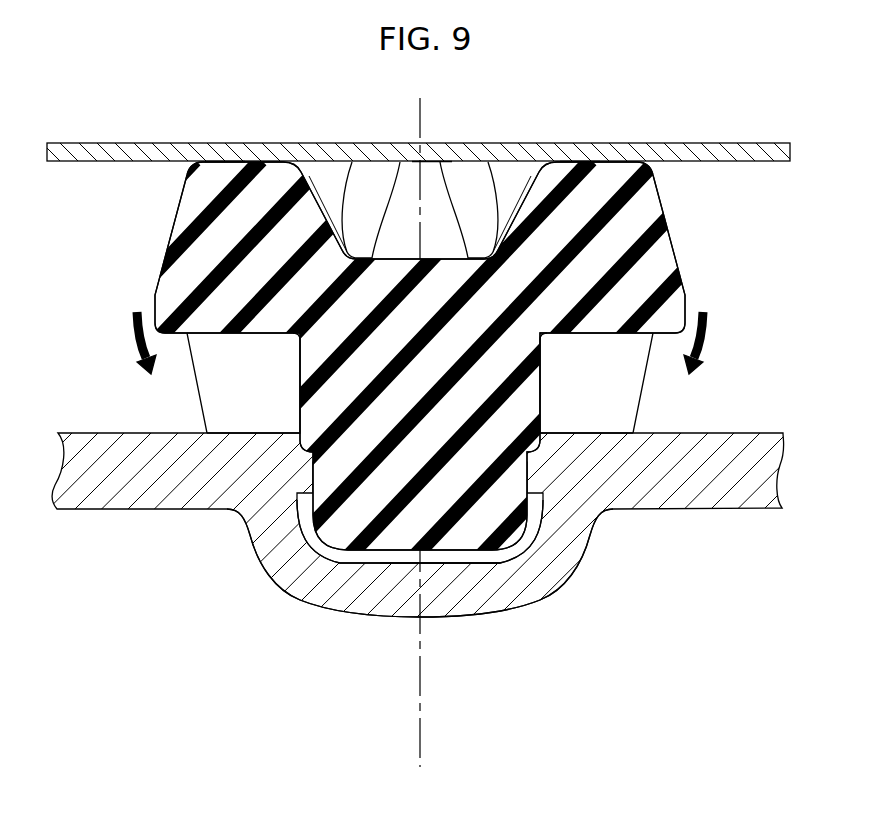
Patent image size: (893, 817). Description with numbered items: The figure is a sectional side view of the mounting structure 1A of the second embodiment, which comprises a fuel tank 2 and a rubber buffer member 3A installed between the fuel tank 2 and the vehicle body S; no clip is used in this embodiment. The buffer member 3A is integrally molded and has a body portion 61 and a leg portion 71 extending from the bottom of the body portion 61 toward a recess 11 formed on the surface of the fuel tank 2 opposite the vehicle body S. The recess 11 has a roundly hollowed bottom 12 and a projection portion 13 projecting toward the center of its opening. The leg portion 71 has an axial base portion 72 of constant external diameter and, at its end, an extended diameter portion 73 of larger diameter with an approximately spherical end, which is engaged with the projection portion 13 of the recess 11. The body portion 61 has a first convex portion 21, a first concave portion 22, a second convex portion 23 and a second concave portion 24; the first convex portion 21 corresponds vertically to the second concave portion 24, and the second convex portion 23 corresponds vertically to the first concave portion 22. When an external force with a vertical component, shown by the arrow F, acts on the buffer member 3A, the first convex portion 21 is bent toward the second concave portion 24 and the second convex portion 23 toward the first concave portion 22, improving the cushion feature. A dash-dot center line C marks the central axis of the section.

The first convex portion 21 is at (230, 160).
The first concave portion 22 is at (315, 180).
The vehicle body S is at (747, 150).
The buffer member 3A is at (427, 330).
The body portion 61 is at (135, 273).
The arrow F is at (133, 318).
The second concave portion 24 is at (240, 340).
The second convex portion 23 is at (200, 412).
The projection portion 13 is at (307, 453).
The axial base portion 72 is at (243, 527).
The mounting structure 1A is at (162, 553).
The leg portion 71 is at (325, 545).
The extended diameter portion 73 is at (358, 592).
The bottom 12 is at (410, 565).
The recess 11 is at (442, 560).
The fuel tank 2 is at (446, 542).
The center axis C is at (418, 716).